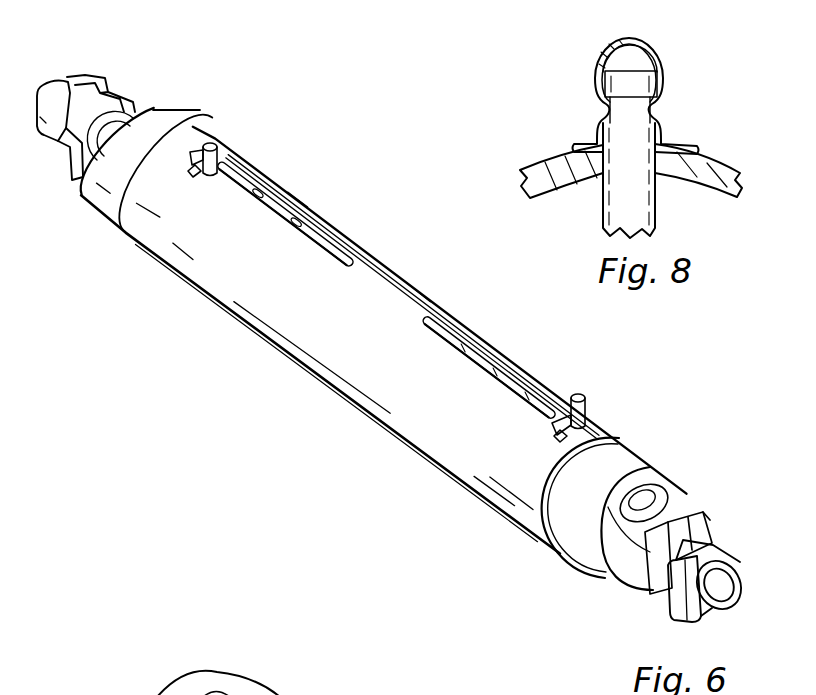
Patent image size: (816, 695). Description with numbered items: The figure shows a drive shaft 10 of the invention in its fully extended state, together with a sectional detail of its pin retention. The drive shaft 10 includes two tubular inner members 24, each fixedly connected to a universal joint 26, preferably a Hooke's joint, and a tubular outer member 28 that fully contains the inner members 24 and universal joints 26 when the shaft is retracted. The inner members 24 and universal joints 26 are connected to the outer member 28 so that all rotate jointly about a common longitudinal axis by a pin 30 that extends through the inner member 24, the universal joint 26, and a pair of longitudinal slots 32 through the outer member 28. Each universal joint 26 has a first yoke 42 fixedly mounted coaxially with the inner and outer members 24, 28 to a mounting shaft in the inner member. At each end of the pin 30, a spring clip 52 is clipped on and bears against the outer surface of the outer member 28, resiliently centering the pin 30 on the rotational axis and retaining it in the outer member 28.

In FIG. 6, the drive shaft 10 is at (639, 439).
In FIG. 6, the inner member 24 is at (177, 120).
In FIG. 6, the universal joint 26 is at (67, 82).
In FIG. 6, the outer member 28 is at (575, 557).
In FIG. 8, the outer member 28 is at (722, 160).
In FIG. 6, the pin 30 is at (233, 155).
In FIG. 8, the pin 30 is at (657, 221).
In FIG. 6, the longitudinal slot 32 is at (310, 233).
In FIG. 6, the first yoke 42 is at (683, 514).
In FIG. 8, the spring clip 52 is at (662, 59).